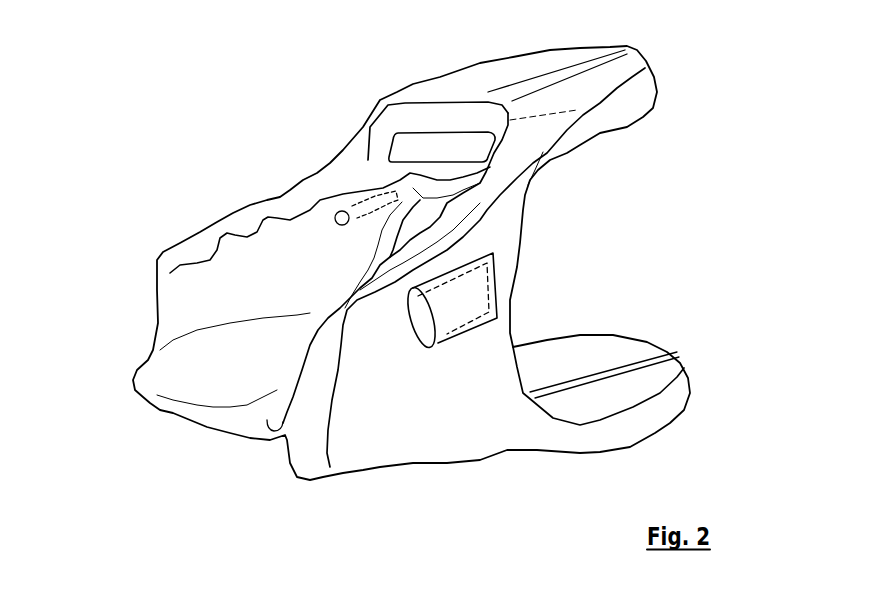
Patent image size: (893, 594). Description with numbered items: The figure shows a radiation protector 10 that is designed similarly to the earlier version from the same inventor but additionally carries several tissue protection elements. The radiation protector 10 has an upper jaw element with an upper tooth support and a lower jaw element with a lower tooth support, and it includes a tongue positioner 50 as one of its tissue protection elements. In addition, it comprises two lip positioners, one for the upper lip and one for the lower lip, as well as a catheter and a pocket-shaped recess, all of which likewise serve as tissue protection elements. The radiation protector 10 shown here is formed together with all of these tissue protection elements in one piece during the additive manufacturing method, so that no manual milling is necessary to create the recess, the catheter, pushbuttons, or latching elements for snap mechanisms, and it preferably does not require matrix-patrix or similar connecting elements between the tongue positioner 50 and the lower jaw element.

The radiation protector 10 is at (130, 313).
The tongue positioner 50 is at (253, 373).